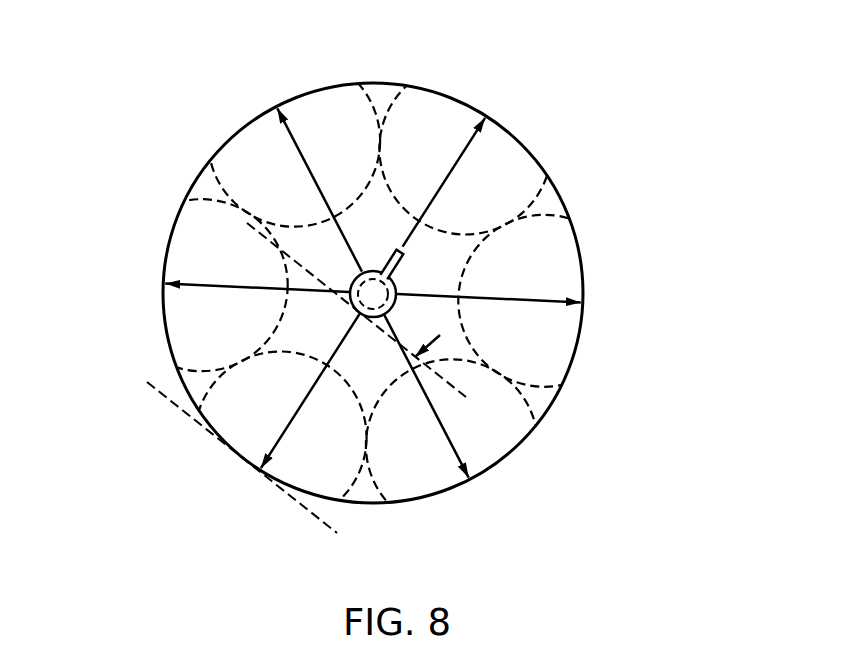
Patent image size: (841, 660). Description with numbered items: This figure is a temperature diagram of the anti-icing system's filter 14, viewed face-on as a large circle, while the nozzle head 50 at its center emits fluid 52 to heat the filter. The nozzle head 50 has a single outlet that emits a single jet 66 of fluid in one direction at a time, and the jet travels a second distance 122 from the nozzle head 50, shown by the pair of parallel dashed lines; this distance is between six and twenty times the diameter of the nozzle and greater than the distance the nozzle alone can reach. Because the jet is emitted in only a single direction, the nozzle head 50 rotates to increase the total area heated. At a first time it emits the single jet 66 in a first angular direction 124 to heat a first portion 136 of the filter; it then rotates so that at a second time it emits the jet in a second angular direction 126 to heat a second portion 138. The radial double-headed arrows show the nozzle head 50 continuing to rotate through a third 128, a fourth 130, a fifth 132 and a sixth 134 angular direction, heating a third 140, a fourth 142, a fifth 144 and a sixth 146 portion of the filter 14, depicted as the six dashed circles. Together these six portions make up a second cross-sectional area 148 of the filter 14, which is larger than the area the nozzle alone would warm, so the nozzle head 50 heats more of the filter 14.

The filter 14 is at (322, 88).
The nozzle head 50 is at (375, 318).
The fluid 52 is at (465, 149).
The single jet 66 is at (372, 293).
The second distance 122 is at (285, 493).
The first angular direction 124 is at (282, 431).
The second angular direction 126 is at (202, 285).
The third angular direction 128 is at (294, 141).
The fourth angular direction 130 is at (465, 149).
The fifth angular direction 132 is at (544, 301).
The sixth angular direction 134 is at (452, 445).
The first portion 136 is at (253, 417).
The second portion 138 is at (199, 242).
The third portion 140 is at (260, 163).
The fourth portion 142 is at (418, 118).
The fifth portion 144 is at (540, 248).
The sixth portion 146 is at (500, 428).
The second cross-sectional area 148 is at (394, 232).